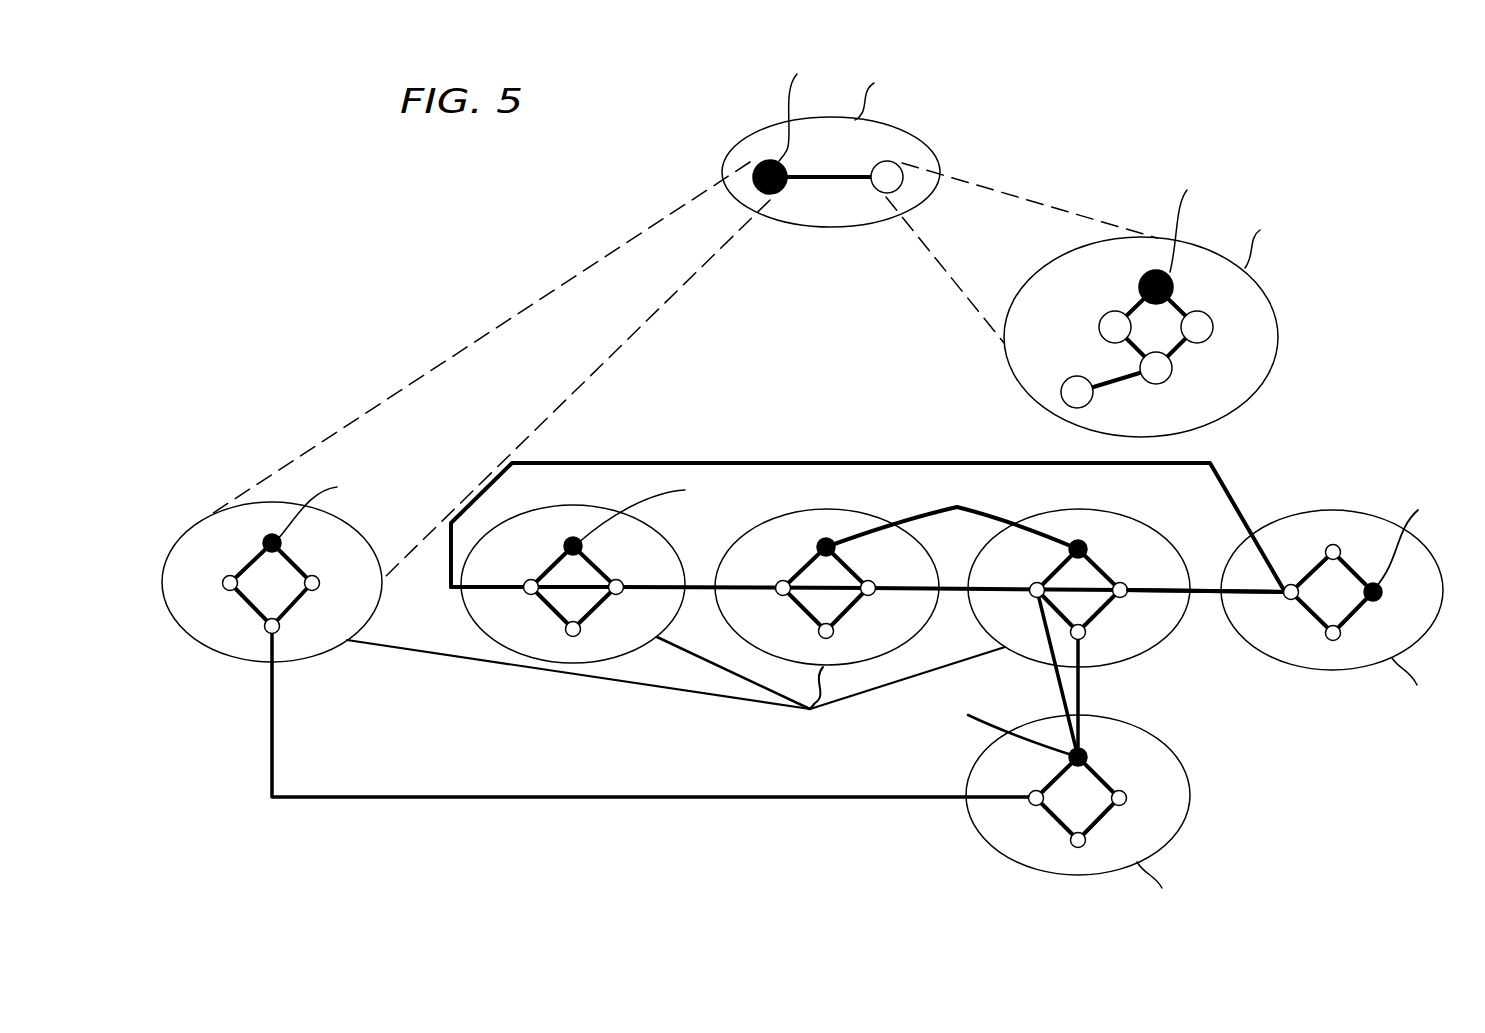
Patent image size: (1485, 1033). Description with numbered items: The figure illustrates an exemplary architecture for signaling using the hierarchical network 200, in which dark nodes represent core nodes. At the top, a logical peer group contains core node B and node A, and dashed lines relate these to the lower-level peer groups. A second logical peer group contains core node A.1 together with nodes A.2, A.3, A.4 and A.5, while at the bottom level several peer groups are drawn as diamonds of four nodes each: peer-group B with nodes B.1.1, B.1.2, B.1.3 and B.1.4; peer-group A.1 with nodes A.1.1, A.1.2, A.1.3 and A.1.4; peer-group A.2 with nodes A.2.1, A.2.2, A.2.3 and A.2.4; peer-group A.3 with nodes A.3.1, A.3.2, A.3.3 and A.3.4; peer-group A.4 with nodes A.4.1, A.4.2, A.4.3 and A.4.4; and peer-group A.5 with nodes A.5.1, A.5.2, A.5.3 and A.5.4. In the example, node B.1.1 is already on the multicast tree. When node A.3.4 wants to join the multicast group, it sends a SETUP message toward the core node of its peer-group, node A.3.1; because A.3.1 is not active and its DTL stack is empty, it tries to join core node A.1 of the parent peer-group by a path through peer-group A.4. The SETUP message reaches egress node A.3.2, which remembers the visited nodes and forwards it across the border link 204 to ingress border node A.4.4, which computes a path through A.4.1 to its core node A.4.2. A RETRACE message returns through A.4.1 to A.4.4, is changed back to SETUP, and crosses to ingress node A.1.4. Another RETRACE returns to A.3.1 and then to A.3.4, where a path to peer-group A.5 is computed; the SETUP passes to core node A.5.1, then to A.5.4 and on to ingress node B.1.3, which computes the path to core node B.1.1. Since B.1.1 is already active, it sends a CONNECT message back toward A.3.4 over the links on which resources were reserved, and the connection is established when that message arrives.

The network 200 is at (491, 163).
The border link 204 is at (1203, 594).
The peer-group B is at (770, 164).
The node A is at (887, 164).
The core node A.1 is at (1156, 275).
The node A.2 is at (1212, 327).
The node A.3 is at (1171, 370).
The peer-group A.4 is at (1099, 327).
The peer-group A.5 is at (1063, 387).
The node B.1.1 is at (269, 530).
The node B.1.2 is at (336, 585).
The node B.1.3 is at (296, 632).
The node B.1.4 is at (207, 585).
The node A.1.1 is at (571, 533).
The node A.1.2 is at (635, 577).
The node A.1.3 is at (598, 635).
The node A.1.4 is at (512, 577).
The node A.2.1 is at (823, 534).
The node A.2.2 is at (888, 577).
The node A.2.3 is at (852, 637).
The node A.2.4 is at (765, 577).
The node A.3.1 is at (1076, 536).
The node A.3.2 is at (1142, 581).
The node A.3.3 is at (1103, 638).
The node A.3.4 is at (1017, 581).
The node A.4.1 is at (1329, 539).
The node A.4.2 is at (1397, 595).
The node A.4.3 is at (1358, 640).
The node A.4.4 is at (1269, 604).
The node A.5.1 is at (1099, 751).
The node A.5.2 is at (1143, 800).
The node A.5.3 is at (1103, 845).
The node A.5.4 is at (1013, 810).